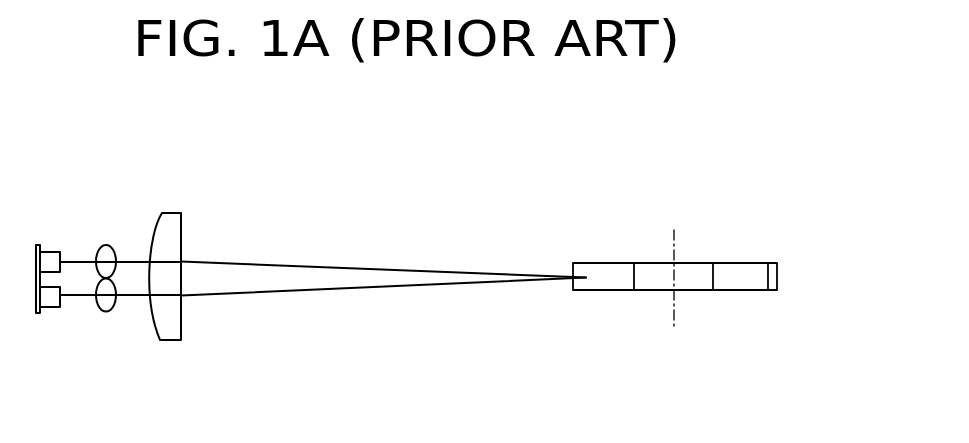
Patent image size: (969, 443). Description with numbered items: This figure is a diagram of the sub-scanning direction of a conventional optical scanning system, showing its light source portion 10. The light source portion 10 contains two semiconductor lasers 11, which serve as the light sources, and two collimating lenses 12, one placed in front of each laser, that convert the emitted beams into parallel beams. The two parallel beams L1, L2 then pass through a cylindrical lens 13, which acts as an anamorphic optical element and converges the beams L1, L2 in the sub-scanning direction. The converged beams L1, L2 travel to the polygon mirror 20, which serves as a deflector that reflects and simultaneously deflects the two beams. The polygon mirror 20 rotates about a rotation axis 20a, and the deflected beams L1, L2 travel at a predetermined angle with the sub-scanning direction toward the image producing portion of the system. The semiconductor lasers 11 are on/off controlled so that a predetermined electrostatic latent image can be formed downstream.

The light source portion 10 is at (75, 180).
The semiconductor laser 11 is at (50, 252).
The collimating lens 12 is at (105, 245).
The cylindrical lens 13 is at (170, 342).
The polygon mirror 20 is at (602, 291).
The rotation axis 20a is at (675, 310).
The first beam L1 is at (304, 266).
The second beam L2 is at (330, 290).